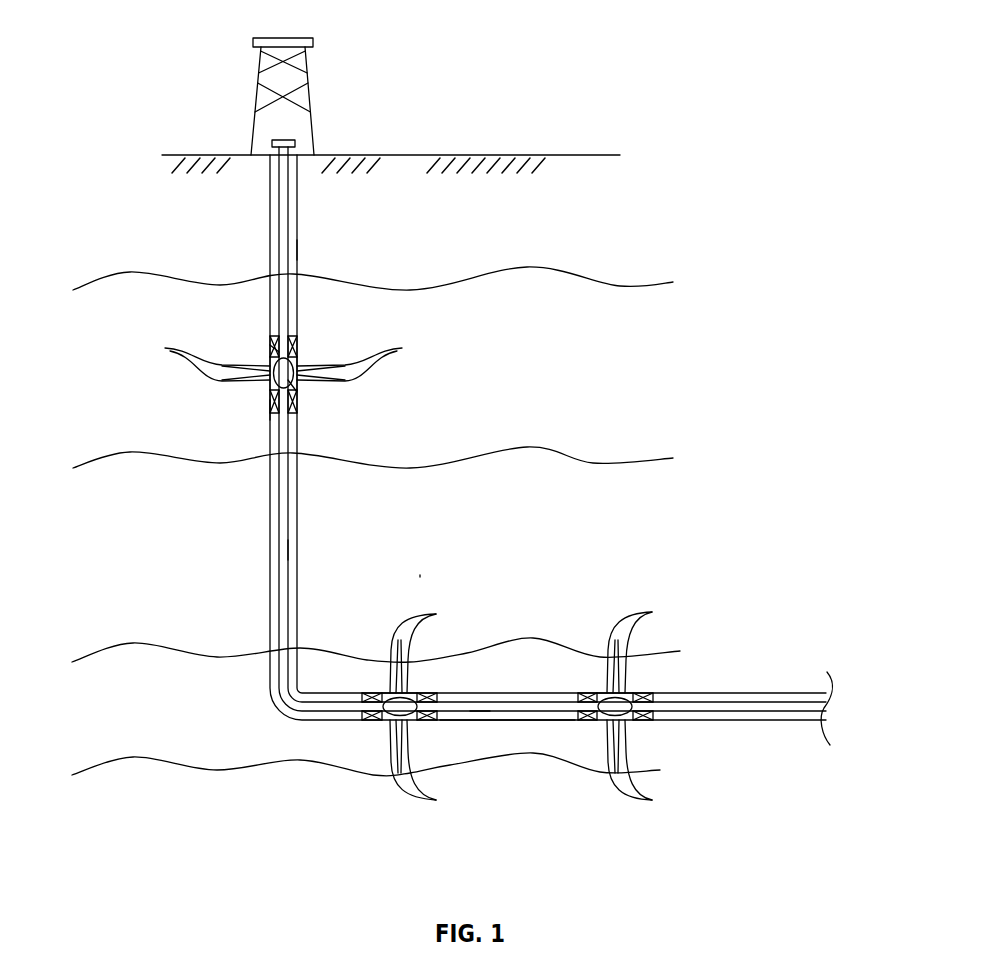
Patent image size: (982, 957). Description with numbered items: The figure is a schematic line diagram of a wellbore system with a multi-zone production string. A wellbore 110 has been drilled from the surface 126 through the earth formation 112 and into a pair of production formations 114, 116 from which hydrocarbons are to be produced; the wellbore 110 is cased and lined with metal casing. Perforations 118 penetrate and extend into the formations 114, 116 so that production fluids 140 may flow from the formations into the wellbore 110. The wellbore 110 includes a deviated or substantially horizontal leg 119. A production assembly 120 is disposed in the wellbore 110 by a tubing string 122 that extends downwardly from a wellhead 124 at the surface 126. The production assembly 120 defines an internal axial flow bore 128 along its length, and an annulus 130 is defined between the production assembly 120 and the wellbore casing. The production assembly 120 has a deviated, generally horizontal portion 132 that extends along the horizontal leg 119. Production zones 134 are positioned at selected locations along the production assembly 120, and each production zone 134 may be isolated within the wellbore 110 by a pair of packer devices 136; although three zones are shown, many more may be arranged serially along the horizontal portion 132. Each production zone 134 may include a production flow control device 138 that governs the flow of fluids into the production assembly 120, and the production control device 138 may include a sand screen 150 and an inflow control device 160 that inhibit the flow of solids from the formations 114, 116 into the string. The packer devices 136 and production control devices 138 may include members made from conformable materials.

The wellbore 110 is at (293, 246).
The earth formation 112 is at (553, 251).
The production formation 114 is at (553, 399).
The production formation 116 is at (195, 718).
The perforations 118 is at (408, 575).
The horizontal leg 119 is at (505, 690).
The production assembly 120 is at (272, 577).
The tubing string 122 is at (279, 231).
The wellhead 124 is at (320, 73).
The surface 126 is at (578, 155).
The internal axial flow bore 128 is at (279, 524).
The annulus 130 is at (289, 552).
The horizontal portion 132 is at (477, 711).
The production zone 134 is at (270, 387).
The packer devices 136 is at (299, 340).
The production flow control device 138 is at (299, 366).
The production fluids 140 is at (420, 572).
The sand screen 150 is at (299, 392).
The inflow control device 160 is at (268, 350).